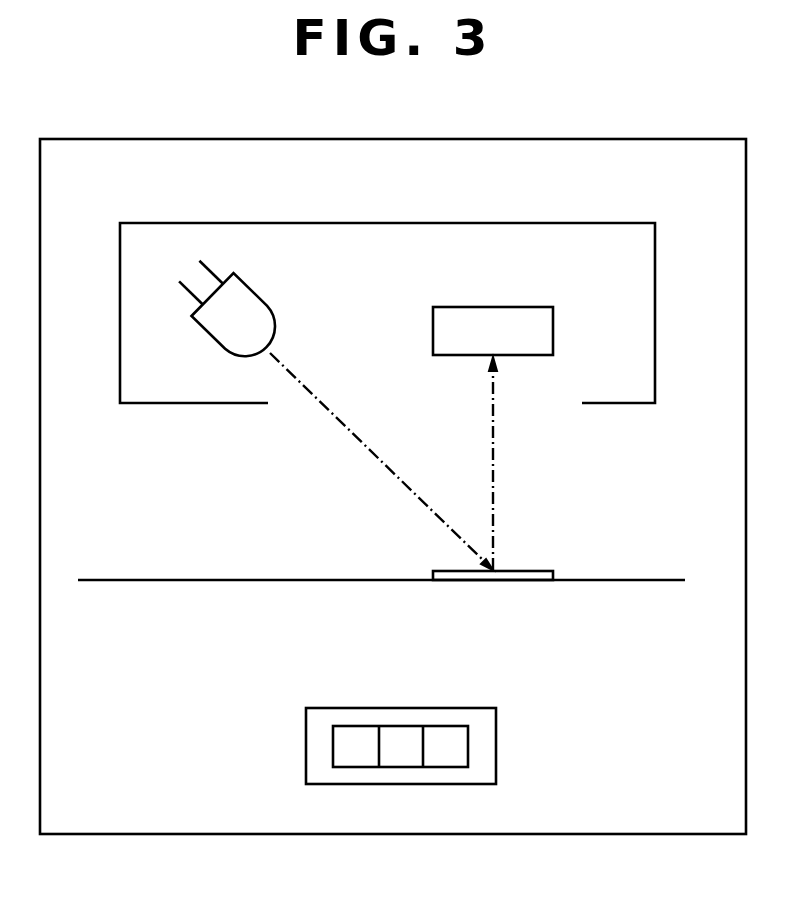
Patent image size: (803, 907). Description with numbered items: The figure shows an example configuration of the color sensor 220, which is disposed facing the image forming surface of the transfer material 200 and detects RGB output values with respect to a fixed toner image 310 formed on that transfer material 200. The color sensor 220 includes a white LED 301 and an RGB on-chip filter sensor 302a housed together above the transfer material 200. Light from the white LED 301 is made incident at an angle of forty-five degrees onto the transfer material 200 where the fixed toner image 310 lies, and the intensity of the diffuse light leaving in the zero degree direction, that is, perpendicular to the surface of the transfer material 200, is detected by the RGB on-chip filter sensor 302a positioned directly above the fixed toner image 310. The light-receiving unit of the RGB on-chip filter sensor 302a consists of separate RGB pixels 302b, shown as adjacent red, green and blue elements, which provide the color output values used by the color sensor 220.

The color sensor 220 is at (571, 222).
The white LED 301 is at (266, 301).
The RGB on-chip filter sensor 302a is at (461, 306).
The RGB pixels 302b is at (338, 707).
The transfer material 200 is at (174, 578).
The fixed toner image 310 is at (520, 570).